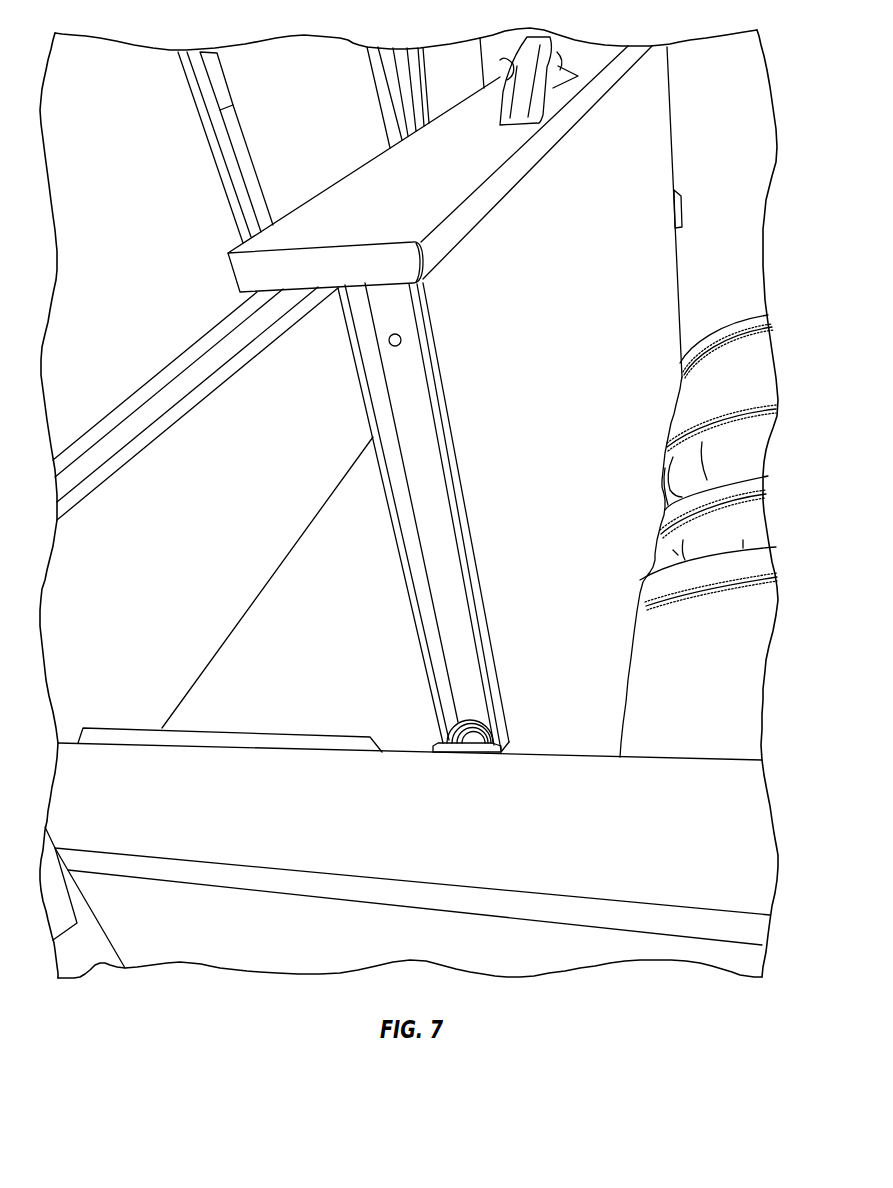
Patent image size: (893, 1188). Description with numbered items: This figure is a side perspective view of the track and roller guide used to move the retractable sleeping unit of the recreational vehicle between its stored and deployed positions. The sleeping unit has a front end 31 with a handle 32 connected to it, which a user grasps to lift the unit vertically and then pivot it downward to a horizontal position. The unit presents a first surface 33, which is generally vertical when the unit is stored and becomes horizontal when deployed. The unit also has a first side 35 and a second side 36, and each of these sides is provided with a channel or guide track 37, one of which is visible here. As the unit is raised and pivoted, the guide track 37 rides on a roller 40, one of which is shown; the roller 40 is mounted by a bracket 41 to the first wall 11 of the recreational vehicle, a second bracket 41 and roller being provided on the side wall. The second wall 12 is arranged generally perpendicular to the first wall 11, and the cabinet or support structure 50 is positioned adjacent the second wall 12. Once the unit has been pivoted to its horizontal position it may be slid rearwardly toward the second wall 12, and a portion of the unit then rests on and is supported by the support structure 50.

The first wall 11 is at (730, 276).
The second wall 12 is at (141, 593).
The front end 31 is at (250, 249).
The handle 32 is at (507, 113).
The first surface 33 is at (557, 350).
The first side 35 is at (400, 517).
The second side 36 is at (675, 109).
The guide track 37 is at (392, 452).
The roller 40 is at (473, 723).
The bracket 41 is at (679, 212).
The support structure 50 is at (304, 579).